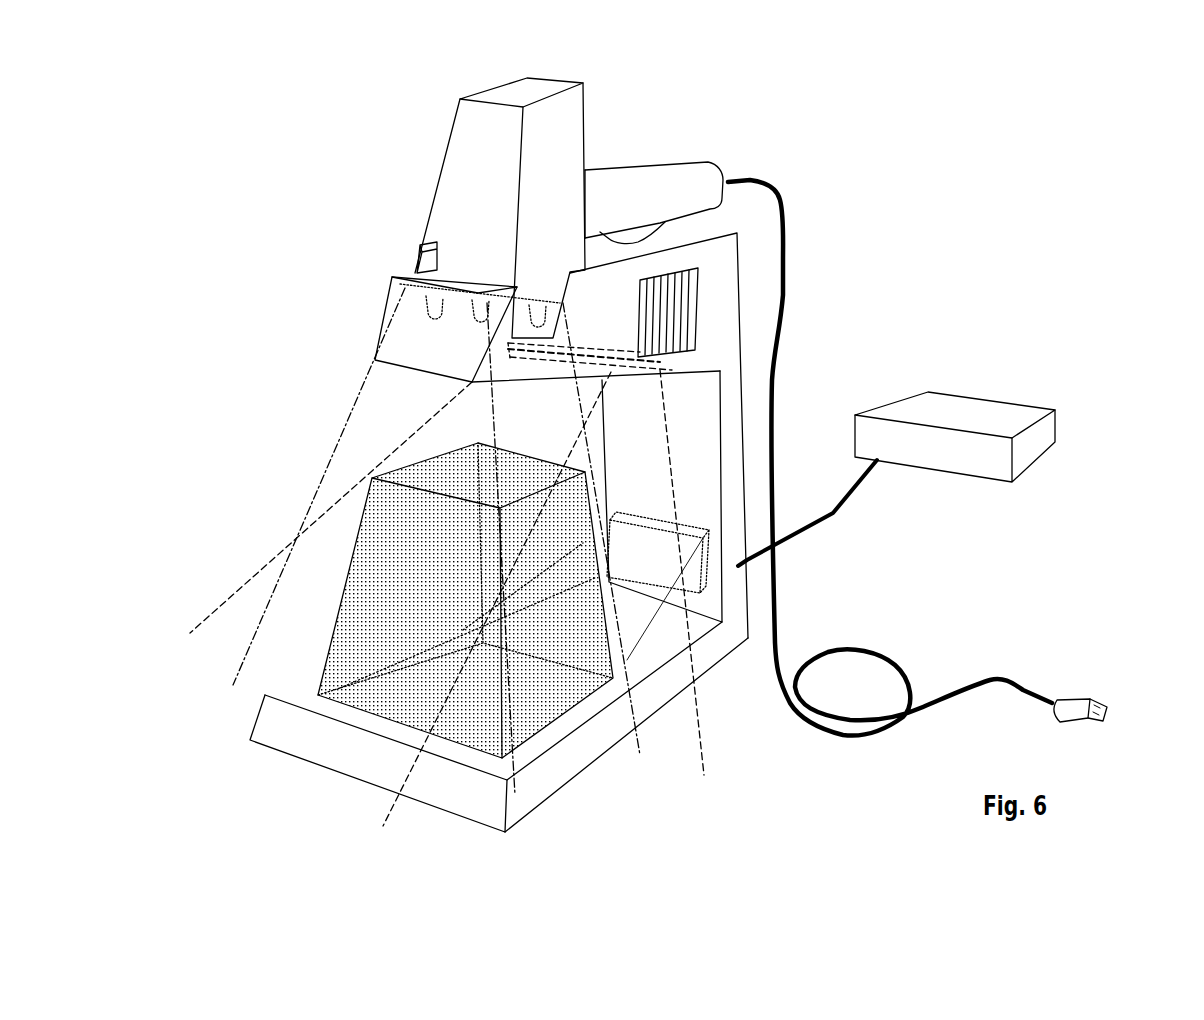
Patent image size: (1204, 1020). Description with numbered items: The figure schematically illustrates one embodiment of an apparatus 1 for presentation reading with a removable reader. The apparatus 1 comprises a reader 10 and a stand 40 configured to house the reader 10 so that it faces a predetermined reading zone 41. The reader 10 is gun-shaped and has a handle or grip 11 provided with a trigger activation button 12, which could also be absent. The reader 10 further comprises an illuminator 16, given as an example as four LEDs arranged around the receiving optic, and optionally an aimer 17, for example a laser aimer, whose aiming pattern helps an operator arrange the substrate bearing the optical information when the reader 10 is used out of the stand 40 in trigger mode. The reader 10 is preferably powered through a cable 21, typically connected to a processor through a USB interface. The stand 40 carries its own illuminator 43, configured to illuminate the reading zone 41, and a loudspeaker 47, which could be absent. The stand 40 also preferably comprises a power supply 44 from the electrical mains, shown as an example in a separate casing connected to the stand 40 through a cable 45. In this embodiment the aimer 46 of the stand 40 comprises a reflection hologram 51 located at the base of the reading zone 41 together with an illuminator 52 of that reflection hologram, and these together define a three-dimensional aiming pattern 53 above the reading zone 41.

The apparatus 1 is at (1126, 145).
The reader 10 is at (364, 146).
The handle or grip 11 is at (703, 172).
The trigger activation button 12 is at (632, 235).
The illuminator 16 is at (397, 285).
The aimer 17 is at (430, 260).
The cable 21 is at (1015, 687).
The stand 40 is at (719, 712).
The reading zone 41 is at (390, 684).
The illuminator 43 is at (690, 357).
The power supply 44 is at (968, 418).
The cable 45 is at (835, 515).
The aimer 46 is at (663, 643).
The loudspeaker 47 is at (697, 320).
The reflection hologram 51 is at (550, 720).
The illuminator 52 is at (697, 560).
The three-dimensional aiming pattern 53 is at (353, 534).